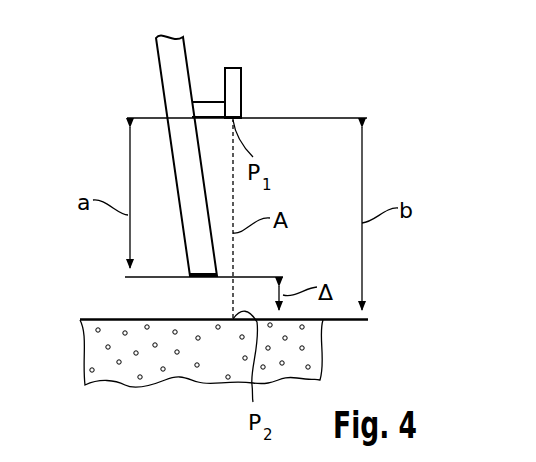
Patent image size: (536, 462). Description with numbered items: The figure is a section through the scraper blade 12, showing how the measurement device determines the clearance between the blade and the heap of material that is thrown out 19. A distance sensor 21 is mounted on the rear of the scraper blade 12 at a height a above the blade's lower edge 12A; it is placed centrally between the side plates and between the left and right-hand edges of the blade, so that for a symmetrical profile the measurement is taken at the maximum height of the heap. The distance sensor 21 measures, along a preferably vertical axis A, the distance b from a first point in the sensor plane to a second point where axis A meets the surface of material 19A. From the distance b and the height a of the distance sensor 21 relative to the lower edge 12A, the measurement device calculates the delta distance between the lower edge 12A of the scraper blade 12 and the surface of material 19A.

The scraper blade 12 is at (170, 72).
The lower edge of the scraper blade 12A is at (203, 278).
The distance sensor 21 is at (237, 93).
The material that is thrown out 19 is at (236, 365).
The surface of material 19A is at (93, 318).